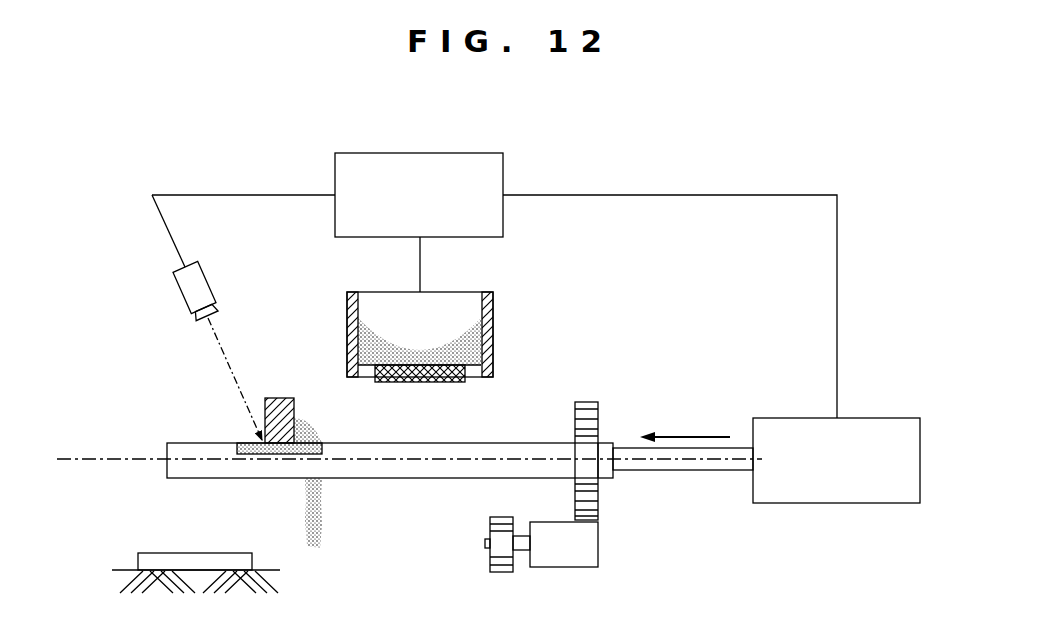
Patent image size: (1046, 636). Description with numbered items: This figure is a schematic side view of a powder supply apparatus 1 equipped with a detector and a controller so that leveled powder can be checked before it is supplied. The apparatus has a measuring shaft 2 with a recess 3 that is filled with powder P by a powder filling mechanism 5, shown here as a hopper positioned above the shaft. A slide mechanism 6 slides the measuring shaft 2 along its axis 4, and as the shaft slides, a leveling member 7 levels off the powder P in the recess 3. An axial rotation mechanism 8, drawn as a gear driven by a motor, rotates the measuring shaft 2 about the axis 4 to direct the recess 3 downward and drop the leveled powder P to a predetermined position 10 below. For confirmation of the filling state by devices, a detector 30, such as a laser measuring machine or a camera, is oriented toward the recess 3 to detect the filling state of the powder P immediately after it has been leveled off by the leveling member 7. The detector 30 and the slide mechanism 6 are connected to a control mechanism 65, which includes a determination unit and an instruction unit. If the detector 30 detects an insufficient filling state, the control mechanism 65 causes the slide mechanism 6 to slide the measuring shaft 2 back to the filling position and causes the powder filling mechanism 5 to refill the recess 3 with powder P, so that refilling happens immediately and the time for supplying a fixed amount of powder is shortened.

The powder supply apparatus 1 is at (885, 278).
The measuring shaft 2 is at (166, 428).
The recess 3 is at (240, 441).
The axis 4 is at (67, 462).
The powder filling mechanism 5 is at (510, 306).
The slide mechanism 6 is at (880, 412).
The leveling member 7 is at (277, 391).
The axial rotation mechanism 8 is at (617, 519).
The predetermined position 10 is at (140, 548).
The detector 30 is at (163, 292).
The control mechanism 65 is at (508, 165).
The powder P is at (247, 441).